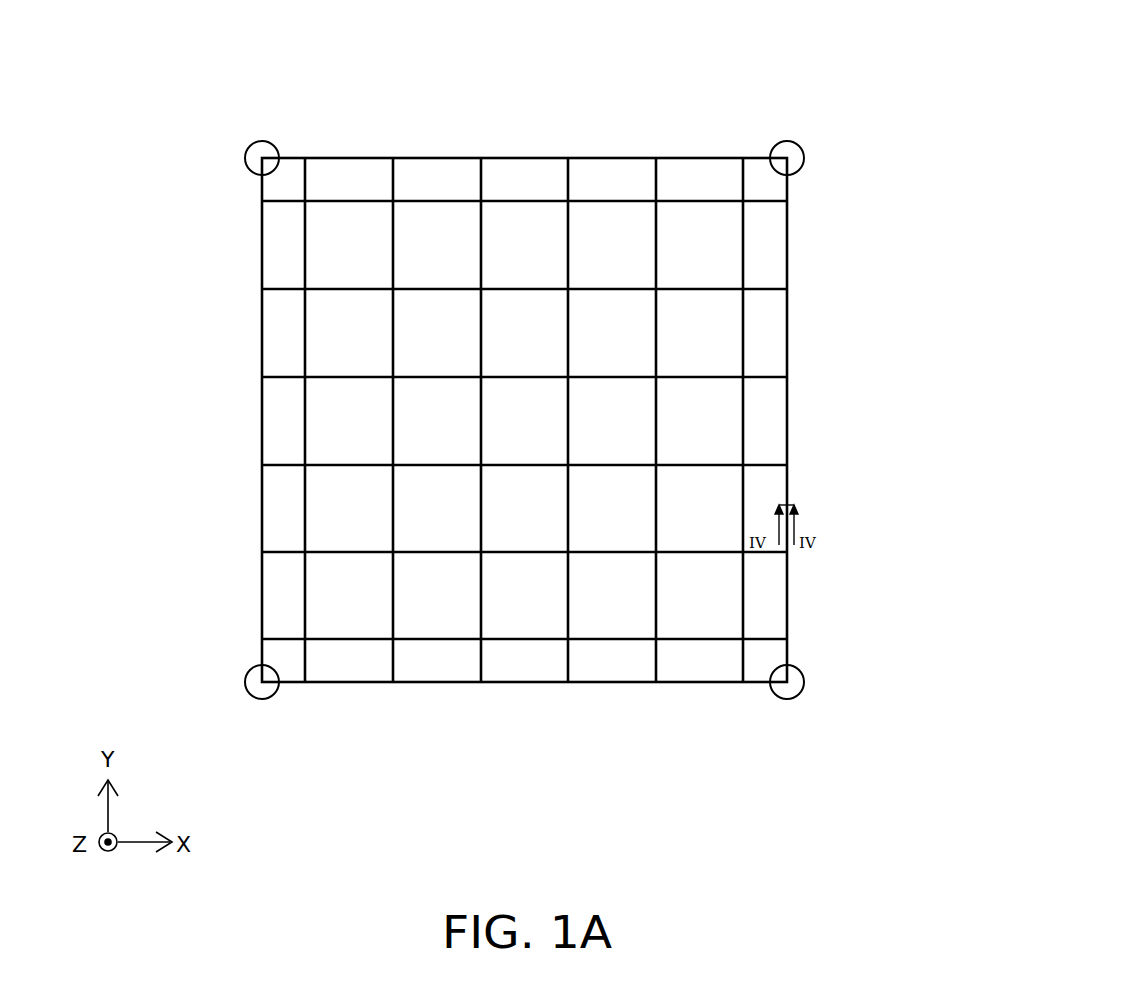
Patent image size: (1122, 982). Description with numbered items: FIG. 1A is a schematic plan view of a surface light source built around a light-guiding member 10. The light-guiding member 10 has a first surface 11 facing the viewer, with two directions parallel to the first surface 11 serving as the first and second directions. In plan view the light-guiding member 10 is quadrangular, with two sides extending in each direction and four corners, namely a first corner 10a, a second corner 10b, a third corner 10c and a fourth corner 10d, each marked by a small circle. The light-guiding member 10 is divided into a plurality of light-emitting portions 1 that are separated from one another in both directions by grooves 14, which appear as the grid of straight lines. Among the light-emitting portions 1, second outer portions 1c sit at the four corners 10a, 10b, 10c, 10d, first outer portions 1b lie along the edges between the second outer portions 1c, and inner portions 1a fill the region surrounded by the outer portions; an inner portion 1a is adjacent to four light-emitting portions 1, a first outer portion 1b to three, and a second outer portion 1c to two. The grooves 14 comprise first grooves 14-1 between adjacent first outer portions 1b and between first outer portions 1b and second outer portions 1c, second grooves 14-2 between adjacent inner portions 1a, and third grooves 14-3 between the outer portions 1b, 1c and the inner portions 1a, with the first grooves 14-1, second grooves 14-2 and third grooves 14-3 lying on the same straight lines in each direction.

The light-guiding member 10 is at (788, 228).
The first corner 10a is at (247, 143).
The second corner 10b is at (800, 148).
The third corner 10c is at (252, 700).
The fourth corner 10d is at (797, 700).
The first surface 11 is at (441, 330).
The light-emitting portions 1 is at (515, 412).
The inner portion 1a is at (618, 250).
The first outer portion 1b is at (525, 178).
The second outer portion 1c is at (288, 180).
The grooves 14 is at (534, 428).
The first grooves 14-1 is at (478, 177).
The second grooves 14-2 is at (482, 244).
The third grooves 14-3 is at (700, 200).